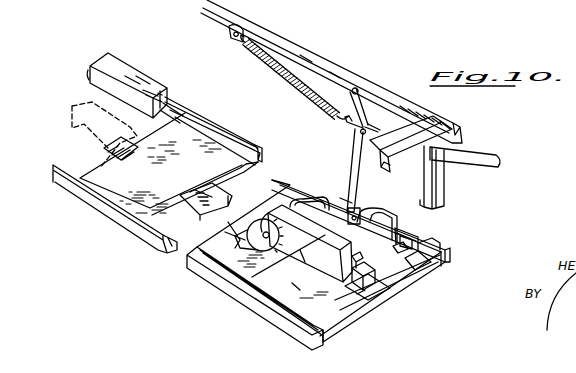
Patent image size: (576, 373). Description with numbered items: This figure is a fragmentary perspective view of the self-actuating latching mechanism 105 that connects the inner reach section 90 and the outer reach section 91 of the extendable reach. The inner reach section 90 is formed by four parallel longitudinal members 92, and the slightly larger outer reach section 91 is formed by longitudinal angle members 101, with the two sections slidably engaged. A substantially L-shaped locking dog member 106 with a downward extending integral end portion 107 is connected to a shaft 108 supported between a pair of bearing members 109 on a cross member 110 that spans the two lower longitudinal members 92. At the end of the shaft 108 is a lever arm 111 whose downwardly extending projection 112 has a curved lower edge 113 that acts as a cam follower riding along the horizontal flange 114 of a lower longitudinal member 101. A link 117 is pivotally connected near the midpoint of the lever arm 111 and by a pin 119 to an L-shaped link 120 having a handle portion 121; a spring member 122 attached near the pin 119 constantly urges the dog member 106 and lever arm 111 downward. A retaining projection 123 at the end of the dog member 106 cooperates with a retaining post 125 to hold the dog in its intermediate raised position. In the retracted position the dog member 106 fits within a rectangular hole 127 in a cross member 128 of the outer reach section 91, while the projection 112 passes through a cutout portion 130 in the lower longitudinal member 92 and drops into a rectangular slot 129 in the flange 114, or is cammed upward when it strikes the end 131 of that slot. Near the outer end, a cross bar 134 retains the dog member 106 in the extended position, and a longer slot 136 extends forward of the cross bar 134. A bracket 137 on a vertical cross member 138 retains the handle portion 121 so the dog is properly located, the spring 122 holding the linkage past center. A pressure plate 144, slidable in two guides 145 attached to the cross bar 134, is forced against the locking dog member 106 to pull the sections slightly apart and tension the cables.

The inner reach section 90 is at (334, 344).
The outer reach section 91 is at (132, 238).
The longitudinal members 92 is at (217, 7).
The longitudinal angle members 101 is at (175, 103).
The self-actuating latching mechanism 105 is at (447, 215).
The locking dog member 106 is at (80, 110).
The downward extending integral end portion 107 is at (92, 150).
The shaft 108 is at (291, 203).
The bearing members 109 is at (273, 215).
The cross member 110 is at (230, 243).
The lever arm 111 is at (336, 214).
The downwardly extending projection 112 is at (398, 219).
The curved lower edge 113 is at (390, 259).
The horizontal flange 114 is at (440, 267).
The link 117 is at (355, 156).
The pin 119 is at (343, 124).
The L-shaped link 120 is at (357, 105).
The handle portion 121 is at (497, 164).
The spring member 122 is at (287, 78).
The retaining projection 123 is at (353, 253).
The retaining post 125 is at (349, 287).
The rectangular hole 127 is at (358, 296).
The cross member 128 is at (395, 288).
The rectangular slot 129 is at (426, 252).
The cutout portion 130 is at (410, 242).
The end of the slot 131 is at (413, 263).
The cross bar 134 is at (113, 193).
The slot 136 is at (198, 118).
The bracket 137 is at (455, 205).
The vertical cross member 138 is at (444, 178).
The pressure plate 144 is at (203, 208).
The guides 145 is at (161, 233).